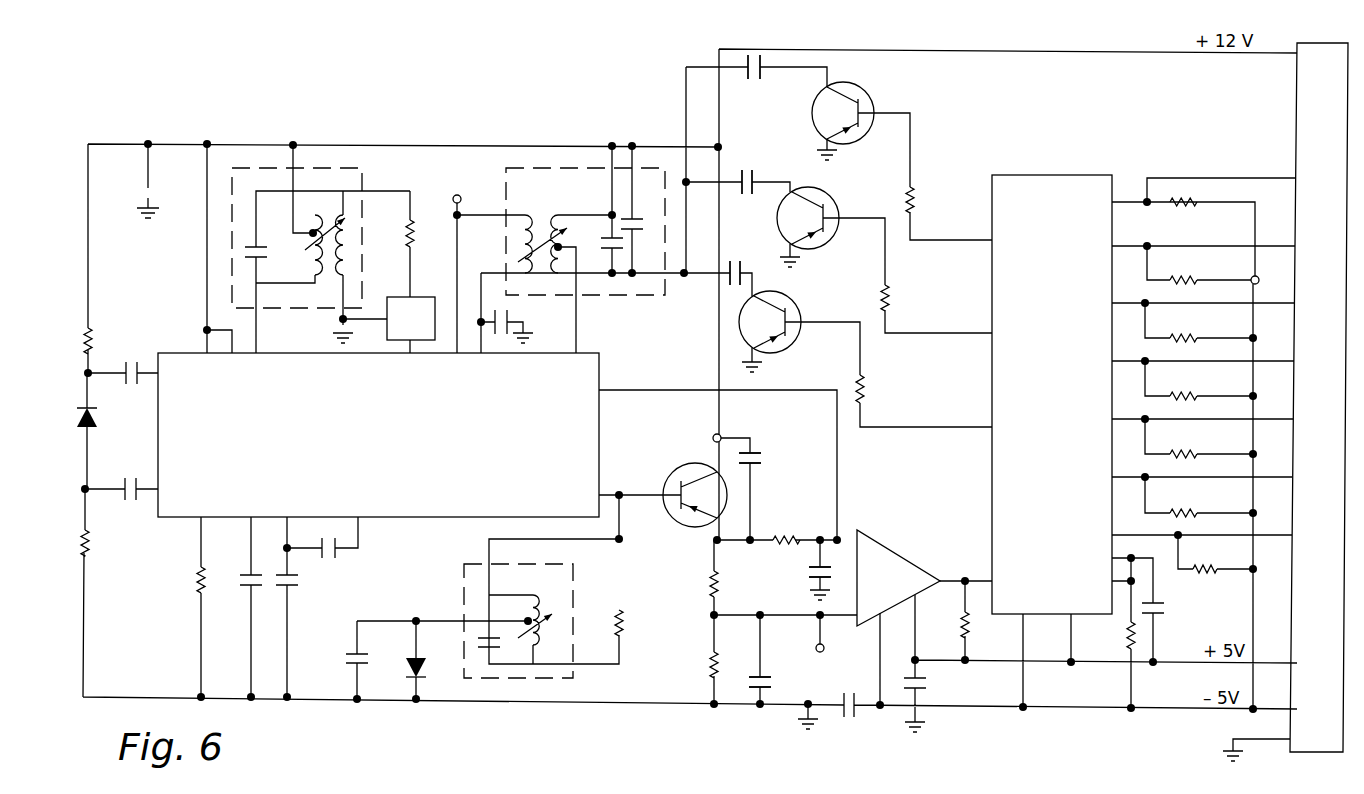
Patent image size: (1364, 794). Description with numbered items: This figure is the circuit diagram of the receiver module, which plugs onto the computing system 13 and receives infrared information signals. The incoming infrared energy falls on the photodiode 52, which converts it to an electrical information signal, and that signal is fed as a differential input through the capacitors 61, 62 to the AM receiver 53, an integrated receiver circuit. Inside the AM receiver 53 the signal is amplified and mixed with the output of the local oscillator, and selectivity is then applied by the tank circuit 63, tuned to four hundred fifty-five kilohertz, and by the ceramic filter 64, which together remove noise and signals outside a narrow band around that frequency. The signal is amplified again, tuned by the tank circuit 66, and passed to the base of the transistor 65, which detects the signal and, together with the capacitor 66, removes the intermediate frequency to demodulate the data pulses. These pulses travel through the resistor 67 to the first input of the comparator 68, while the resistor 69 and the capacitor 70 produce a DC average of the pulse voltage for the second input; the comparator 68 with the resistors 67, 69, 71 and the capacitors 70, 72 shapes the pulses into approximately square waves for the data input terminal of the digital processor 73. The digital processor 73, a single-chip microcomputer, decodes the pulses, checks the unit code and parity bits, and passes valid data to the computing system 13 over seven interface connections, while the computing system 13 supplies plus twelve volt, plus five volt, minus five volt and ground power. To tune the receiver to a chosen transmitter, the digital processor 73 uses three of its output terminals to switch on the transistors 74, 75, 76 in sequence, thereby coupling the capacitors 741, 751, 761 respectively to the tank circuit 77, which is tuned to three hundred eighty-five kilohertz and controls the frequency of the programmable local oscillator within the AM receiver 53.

The computing system 13 is at (1297, 124).
The photodiode 52 is at (72, 422).
The AM receiver 53 is at (176, 510).
The capacitor 61 is at (132, 367).
The capacitor 62 is at (124, 484).
The tank circuit 63 is at (358, 185).
The ceramic filter 64 is at (428, 298).
The transistor 65 is at (674, 466).
The tank circuit / capacitor 66 is at (760, 470).
The resistor 67 is at (720, 587).
The comparator 68 is at (895, 549).
The resistor 69 is at (780, 538).
The capacitor 70 is at (812, 580).
The resistor 71 is at (722, 663).
The capacitor 72 is at (768, 671).
The digital processor 73 is at (992, 481).
The transistor 74 is at (860, 99).
The transistor 75 is at (830, 202).
The transistor 76 is at (792, 307).
The tank circuit 77 is at (522, 182).
The capacitor 741 is at (765, 72).
The capacitor 751 is at (756, 176).
The capacitor 761 is at (738, 263).